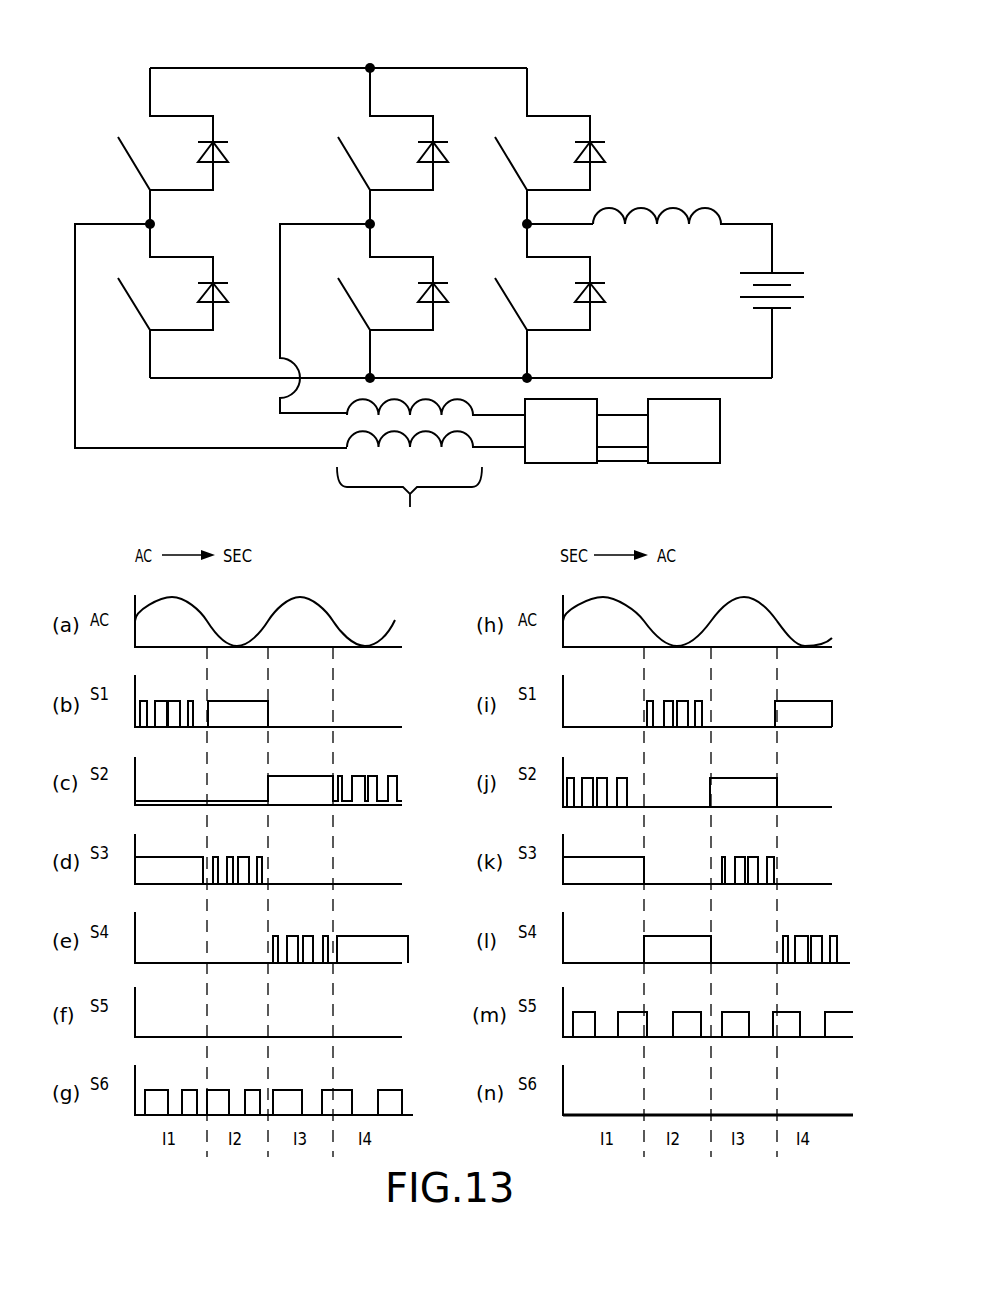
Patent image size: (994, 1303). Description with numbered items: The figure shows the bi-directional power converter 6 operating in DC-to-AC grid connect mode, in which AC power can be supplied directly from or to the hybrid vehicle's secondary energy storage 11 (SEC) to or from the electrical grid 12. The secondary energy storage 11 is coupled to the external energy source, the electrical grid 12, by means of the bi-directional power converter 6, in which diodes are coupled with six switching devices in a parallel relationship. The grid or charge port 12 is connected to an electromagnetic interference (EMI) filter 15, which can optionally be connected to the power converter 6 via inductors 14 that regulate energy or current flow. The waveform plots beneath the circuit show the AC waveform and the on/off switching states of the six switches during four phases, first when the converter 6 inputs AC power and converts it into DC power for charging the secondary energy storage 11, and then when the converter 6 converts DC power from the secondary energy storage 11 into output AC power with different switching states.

The bi-directional power converter 6 is at (315, 46).
The secondary energy storage 11 is at (827, 268).
The electrical grid 12 is at (720, 430).
The inductors 14 is at (365, 413).
The electromagnetic interference (EMI) filter 15 is at (577, 465).